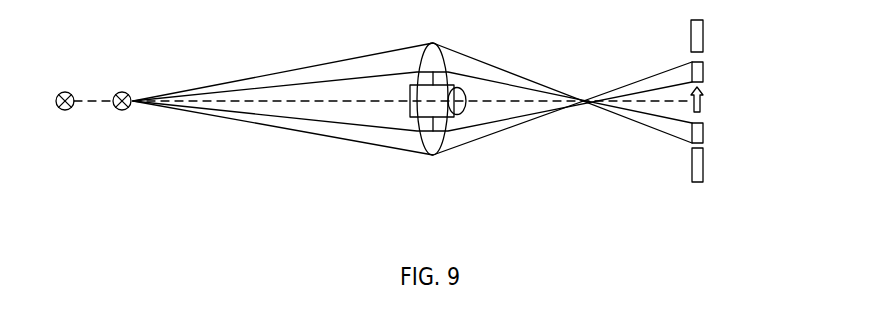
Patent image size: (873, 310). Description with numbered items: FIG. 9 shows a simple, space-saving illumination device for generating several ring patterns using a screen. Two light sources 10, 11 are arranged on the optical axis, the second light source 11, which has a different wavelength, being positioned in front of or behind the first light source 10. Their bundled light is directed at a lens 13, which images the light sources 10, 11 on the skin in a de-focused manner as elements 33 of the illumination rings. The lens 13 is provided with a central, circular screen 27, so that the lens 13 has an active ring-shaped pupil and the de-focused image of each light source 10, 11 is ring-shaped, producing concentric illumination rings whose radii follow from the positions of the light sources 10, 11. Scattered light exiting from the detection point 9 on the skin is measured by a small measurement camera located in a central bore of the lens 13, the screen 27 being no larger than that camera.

The detection point 9 is at (709, 98).
The light source 10 is at (127, 123).
The light source 11 is at (75, 123).
The lens 13 is at (437, 46).
The central circular screen 27 is at (424, 75).
The illumination ring element 33 is at (710, 60).